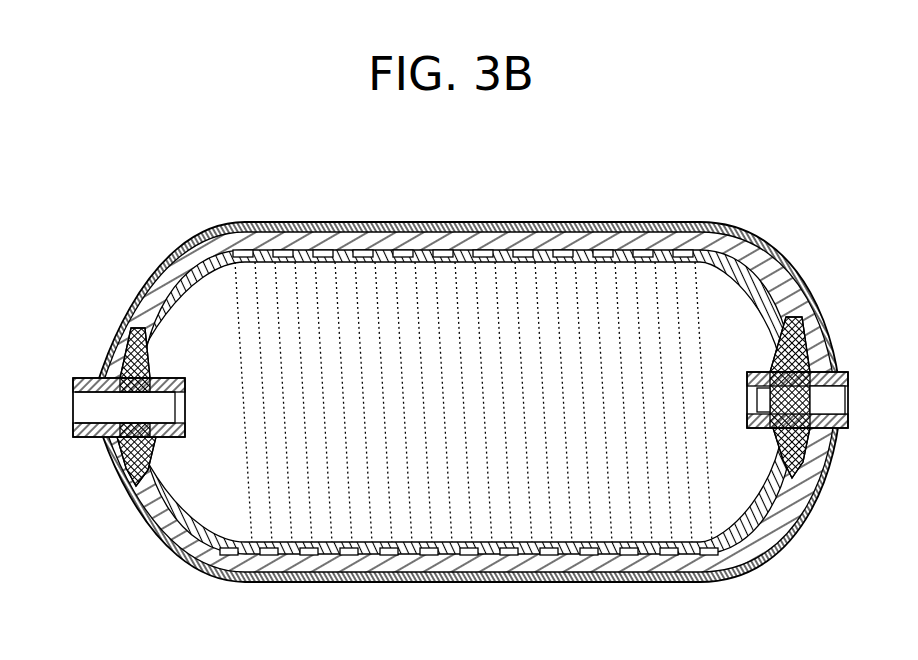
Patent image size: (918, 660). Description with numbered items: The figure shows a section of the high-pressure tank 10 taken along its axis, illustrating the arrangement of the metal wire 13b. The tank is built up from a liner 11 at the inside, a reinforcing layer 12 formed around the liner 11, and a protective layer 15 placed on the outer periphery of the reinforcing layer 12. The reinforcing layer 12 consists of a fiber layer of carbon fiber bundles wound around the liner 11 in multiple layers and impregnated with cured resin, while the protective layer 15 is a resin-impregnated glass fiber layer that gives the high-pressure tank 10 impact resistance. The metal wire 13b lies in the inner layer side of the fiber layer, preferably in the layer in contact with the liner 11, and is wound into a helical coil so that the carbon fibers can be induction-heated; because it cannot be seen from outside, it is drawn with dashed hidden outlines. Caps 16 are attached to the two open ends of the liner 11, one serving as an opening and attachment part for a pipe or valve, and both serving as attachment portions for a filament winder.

The high-pressure tank 10 is at (463, 369).
The liner 11 is at (766, 282).
The reinforcing layer 12 is at (813, 271).
The metal wire 13b is at (608, 277).
The protective layer 15 is at (391, 224).
The cap 16 is at (66, 354).